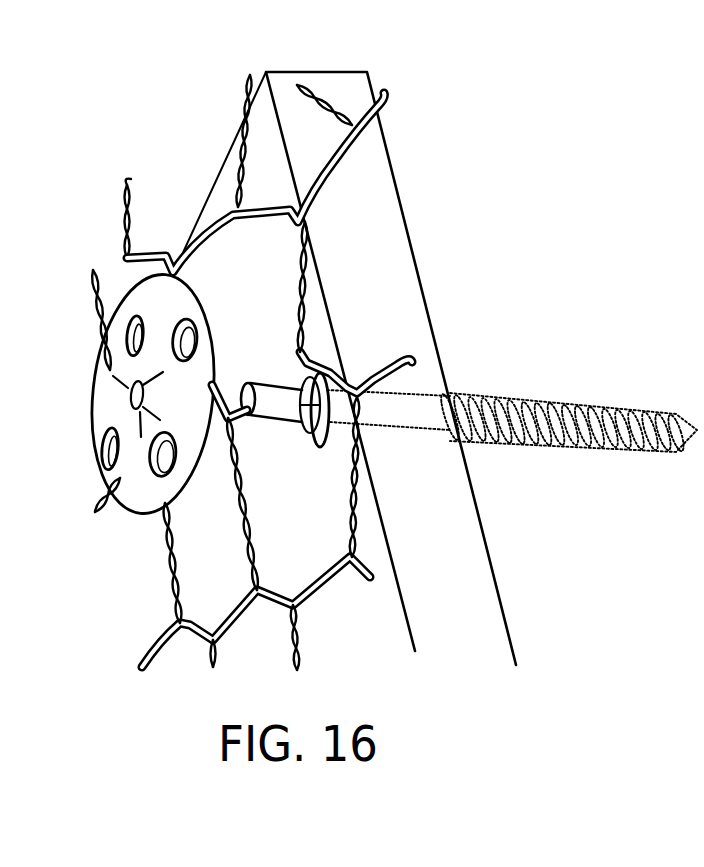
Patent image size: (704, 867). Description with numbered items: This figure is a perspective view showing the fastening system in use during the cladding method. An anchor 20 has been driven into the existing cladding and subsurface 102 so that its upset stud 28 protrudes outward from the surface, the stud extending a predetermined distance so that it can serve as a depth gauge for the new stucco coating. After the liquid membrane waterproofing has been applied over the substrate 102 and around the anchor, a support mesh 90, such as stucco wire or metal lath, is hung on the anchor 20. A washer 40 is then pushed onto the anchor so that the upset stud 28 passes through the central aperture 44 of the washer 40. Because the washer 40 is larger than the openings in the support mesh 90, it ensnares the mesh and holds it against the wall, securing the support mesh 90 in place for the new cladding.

The existing cladding and subsurface 102 is at (428, 347).
The anchor 20 is at (503, 397).
The upset stud 28 is at (305, 340).
The washer 40 is at (110, 422).
The central aperture 44 is at (137, 392).
The support mesh 90 is at (137, 243).